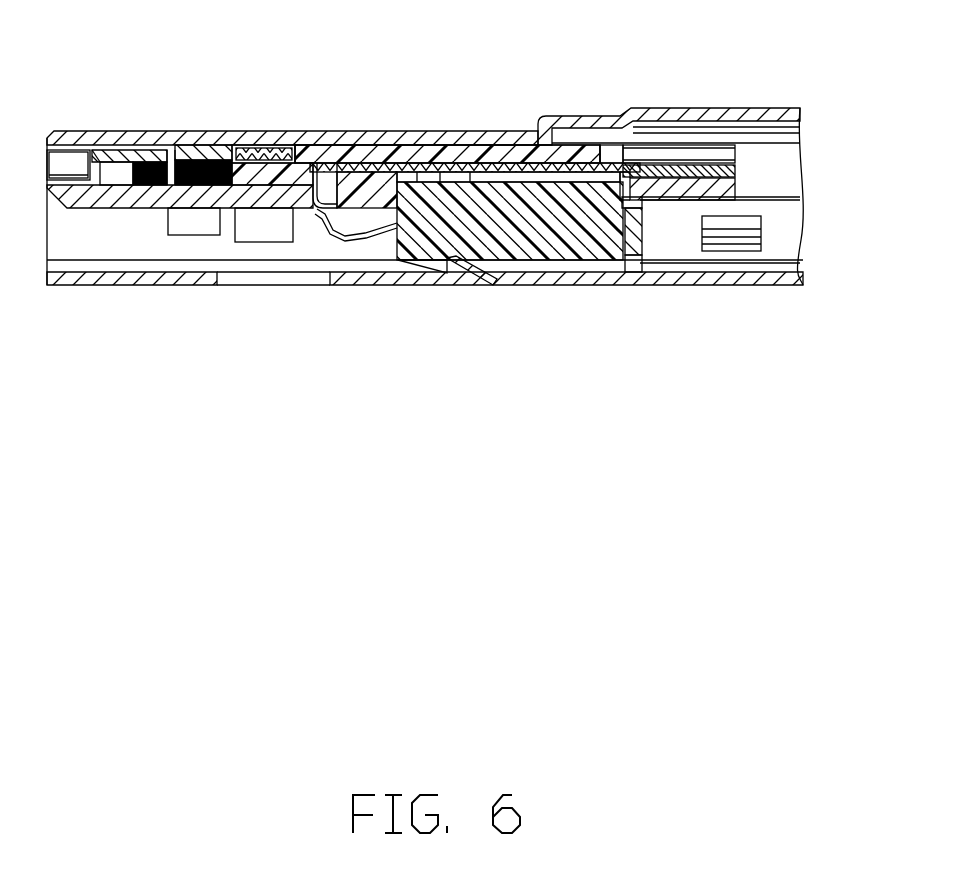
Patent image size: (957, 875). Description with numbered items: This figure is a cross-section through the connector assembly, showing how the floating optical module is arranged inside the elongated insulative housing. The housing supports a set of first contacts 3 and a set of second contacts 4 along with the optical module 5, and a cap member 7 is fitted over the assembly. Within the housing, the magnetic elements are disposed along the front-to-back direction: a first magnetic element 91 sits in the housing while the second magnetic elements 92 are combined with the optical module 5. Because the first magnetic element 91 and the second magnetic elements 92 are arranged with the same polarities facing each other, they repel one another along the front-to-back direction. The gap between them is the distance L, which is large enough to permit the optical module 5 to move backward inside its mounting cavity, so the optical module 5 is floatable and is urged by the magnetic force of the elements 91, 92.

The optical module 5 is at (122, 150).
The second magnetic element 92 is at (150, 162).
The distance L is at (168, 168).
The first magnetic element 91 is at (225, 158).
The cap member 7 is at (315, 160).
The first contacts 3 is at (192, 200).
The second contacts 4 is at (362, 223).